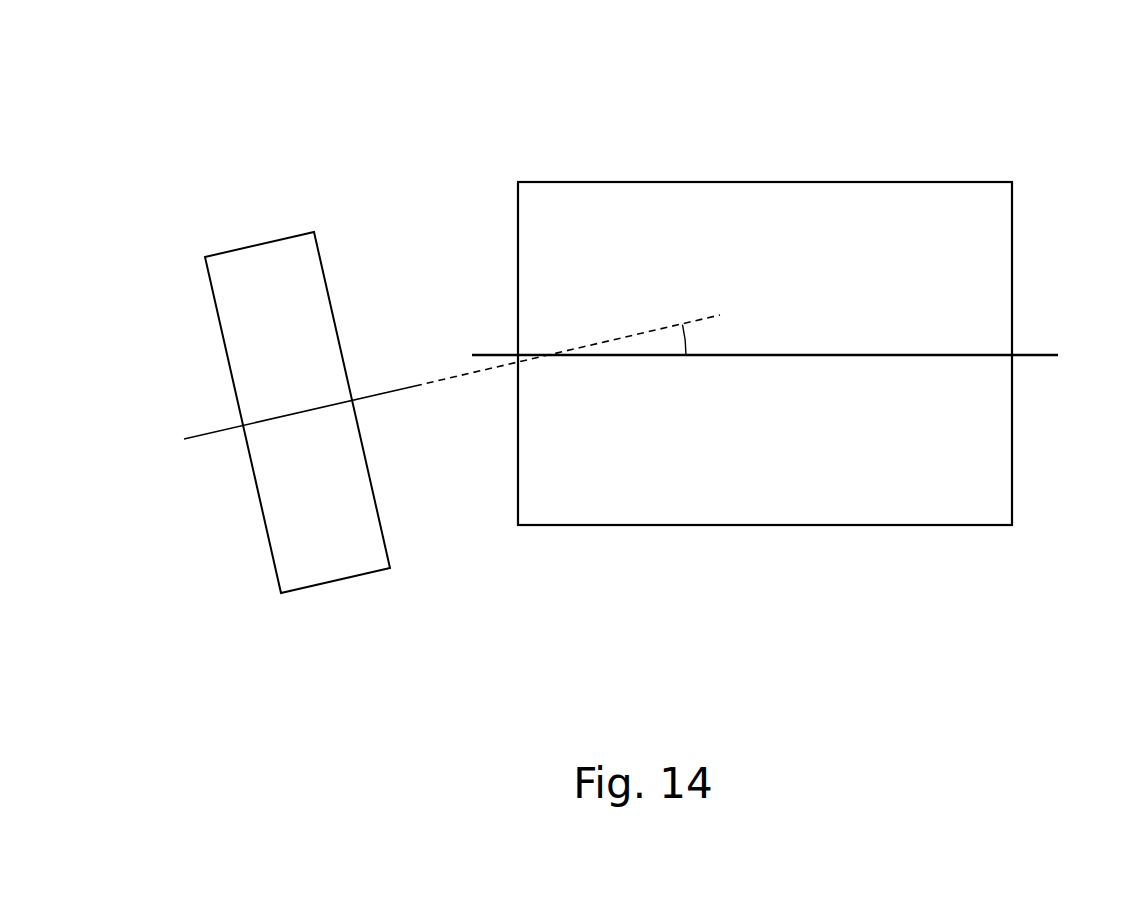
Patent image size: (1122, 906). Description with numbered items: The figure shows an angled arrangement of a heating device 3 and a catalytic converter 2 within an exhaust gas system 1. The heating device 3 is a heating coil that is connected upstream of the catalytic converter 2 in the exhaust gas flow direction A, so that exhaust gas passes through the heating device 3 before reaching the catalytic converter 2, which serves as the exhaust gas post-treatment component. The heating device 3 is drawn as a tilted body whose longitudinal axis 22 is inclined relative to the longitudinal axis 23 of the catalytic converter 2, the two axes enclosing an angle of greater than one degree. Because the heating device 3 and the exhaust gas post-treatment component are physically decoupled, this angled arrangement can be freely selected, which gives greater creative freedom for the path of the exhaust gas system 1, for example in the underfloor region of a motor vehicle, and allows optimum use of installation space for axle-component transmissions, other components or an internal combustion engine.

The exhaust gas system 1 is at (420, 135).
The catalytic converter 2 is at (852, 225).
The heating device 3 is at (283, 268).
The longitudinal axis 22 is at (368, 395).
The longitudinal axis 23 is at (993, 354).
The exhaust gas flow direction A is at (138, 386).